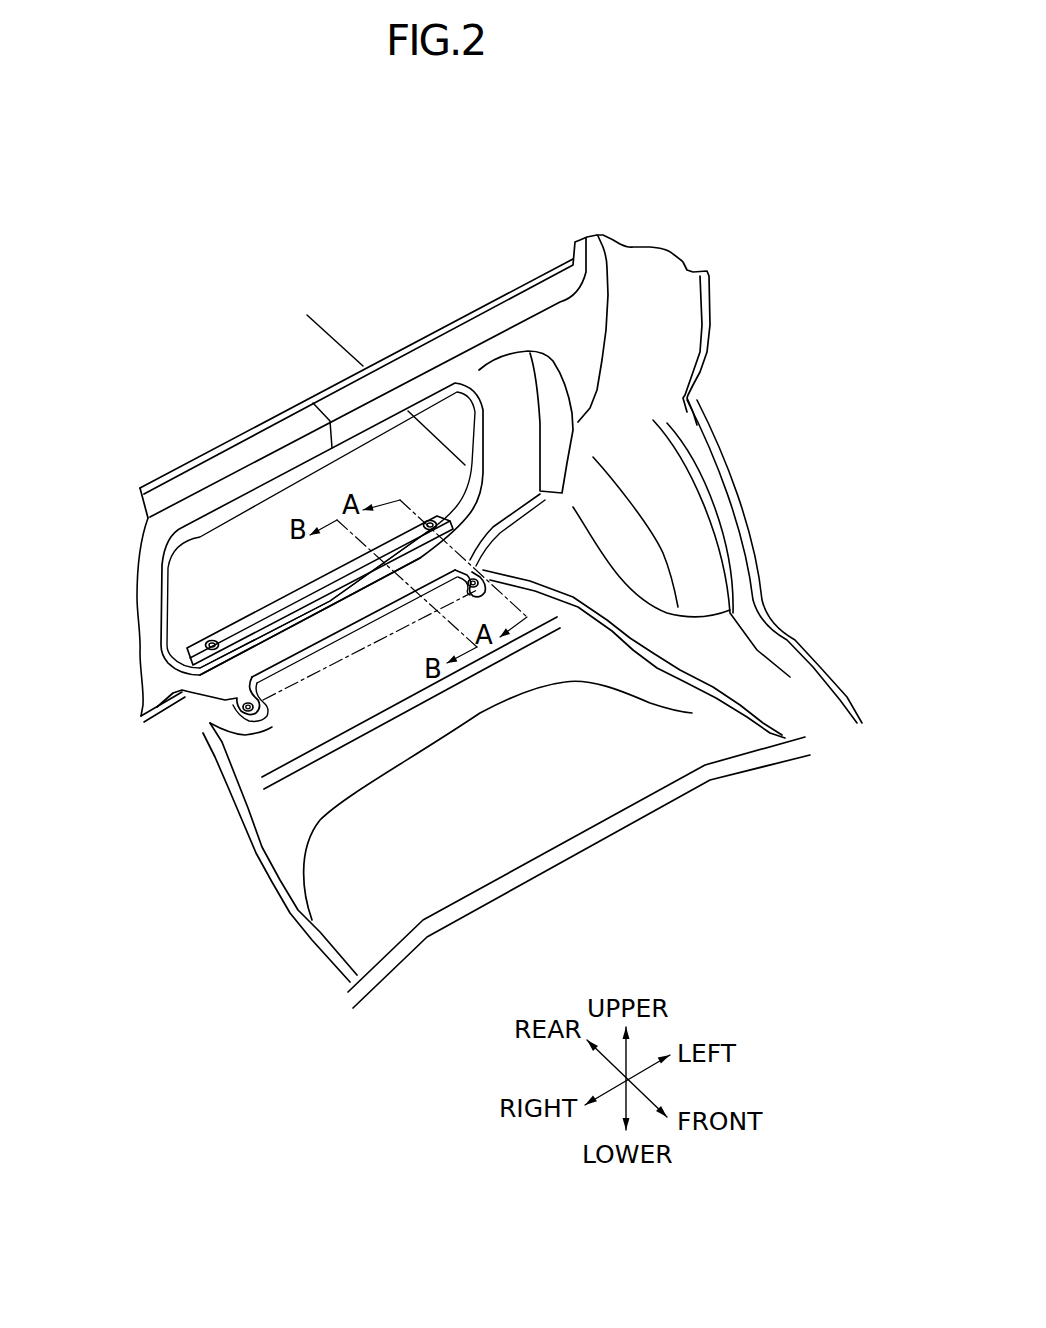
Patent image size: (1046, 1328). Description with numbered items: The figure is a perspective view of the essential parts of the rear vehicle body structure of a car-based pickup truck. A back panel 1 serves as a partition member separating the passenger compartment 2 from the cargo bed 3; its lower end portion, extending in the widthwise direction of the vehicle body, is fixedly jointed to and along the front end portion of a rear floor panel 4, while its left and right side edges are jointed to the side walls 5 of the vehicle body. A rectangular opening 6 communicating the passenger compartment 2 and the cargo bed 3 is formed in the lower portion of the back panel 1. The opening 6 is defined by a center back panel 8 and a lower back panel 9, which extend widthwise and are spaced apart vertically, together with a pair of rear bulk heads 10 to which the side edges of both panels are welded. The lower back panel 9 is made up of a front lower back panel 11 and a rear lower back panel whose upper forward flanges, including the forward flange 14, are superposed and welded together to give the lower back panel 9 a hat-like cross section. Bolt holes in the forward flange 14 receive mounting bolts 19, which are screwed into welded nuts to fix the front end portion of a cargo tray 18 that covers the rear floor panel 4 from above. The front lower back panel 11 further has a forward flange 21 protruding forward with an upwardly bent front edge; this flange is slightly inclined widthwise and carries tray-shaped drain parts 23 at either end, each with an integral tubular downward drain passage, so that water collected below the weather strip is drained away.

The back panel 1 is at (478, 306).
The passenger compartment 2 is at (543, 748).
The cargo bed 3 is at (192, 355).
The rear floor panel 4 is at (243, 729).
The side wall 5 is at (653, 278).
The opening 6 is at (255, 548).
The center back panel 8 is at (392, 367).
The lower back panel 9 is at (380, 588).
The rear bulk head 10 is at (520, 393).
The front lower back panel 11 is at (300, 627).
The forward flange 14 is at (283, 625).
The cargo tray 18 is at (313, 588).
The mounting bolt 19 is at (212, 640).
The forward flange 21 is at (350, 620).
The drain part 23 is at (235, 706).